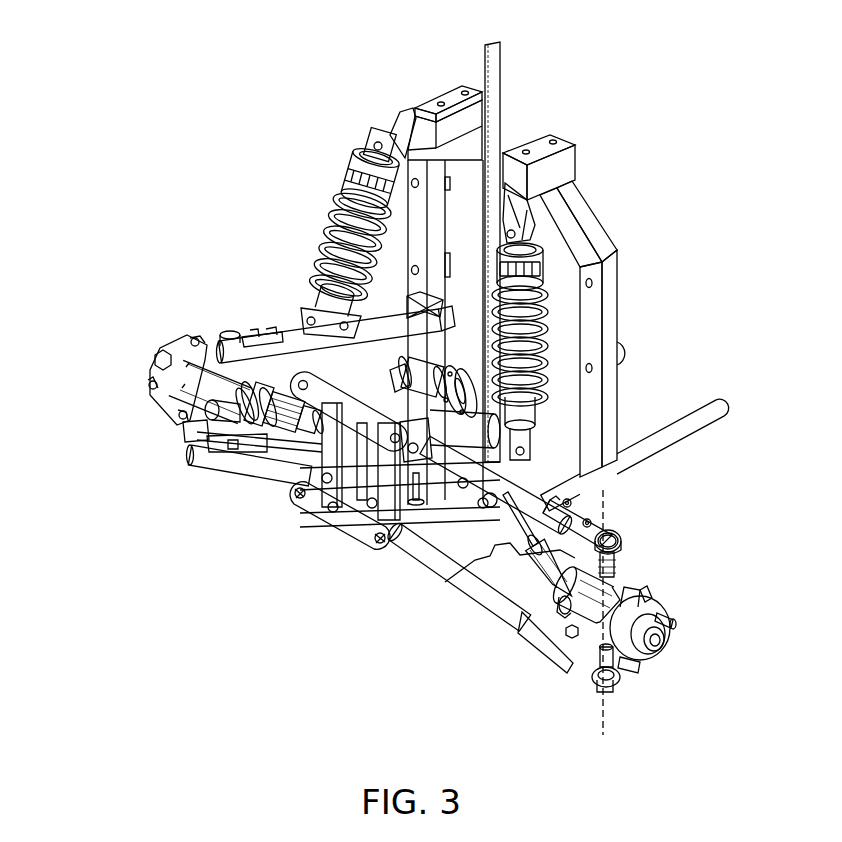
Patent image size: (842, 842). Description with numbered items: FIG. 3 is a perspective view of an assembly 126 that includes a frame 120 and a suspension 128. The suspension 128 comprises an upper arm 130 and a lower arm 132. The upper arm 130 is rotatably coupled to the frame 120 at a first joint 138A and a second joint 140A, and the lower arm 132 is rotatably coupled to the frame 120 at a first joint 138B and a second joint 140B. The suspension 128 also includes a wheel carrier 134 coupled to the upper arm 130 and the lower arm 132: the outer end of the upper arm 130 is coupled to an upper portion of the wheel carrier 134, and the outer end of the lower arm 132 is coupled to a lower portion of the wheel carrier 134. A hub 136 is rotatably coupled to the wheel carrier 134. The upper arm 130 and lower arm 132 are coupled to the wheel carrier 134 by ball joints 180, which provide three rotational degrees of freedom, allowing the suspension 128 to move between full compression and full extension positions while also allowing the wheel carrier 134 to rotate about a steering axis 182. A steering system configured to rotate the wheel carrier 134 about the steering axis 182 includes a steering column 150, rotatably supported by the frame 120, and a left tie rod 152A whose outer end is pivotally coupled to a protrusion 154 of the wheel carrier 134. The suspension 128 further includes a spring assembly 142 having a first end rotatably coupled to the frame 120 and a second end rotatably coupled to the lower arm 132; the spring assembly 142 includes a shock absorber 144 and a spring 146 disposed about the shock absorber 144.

The steering column 150 is at (518, 49).
The spring assembly 142 is at (563, 331).
The shock absorber 144 is at (546, 272).
The spring 146 is at (598, 370).
The second joint 140A is at (473, 360).
The second joint 140B is at (595, 332).
The frame 120 is at (719, 415).
The assembly 126 is at (152, 321).
The suspension 128 is at (602, 603).
The upper arm 130 is at (500, 498).
The lower arm 132 is at (527, 628).
The wheel carrier 134 is at (580, 513).
The hub 136 is at (664, 613).
The first joint 138A is at (400, 447).
The first joint 138B is at (385, 540).
The left tie rod 152A is at (612, 578).
The protrusion 154 is at (624, 536).
The ball joints 180 is at (637, 665).
The steering axis 182 is at (605, 707).